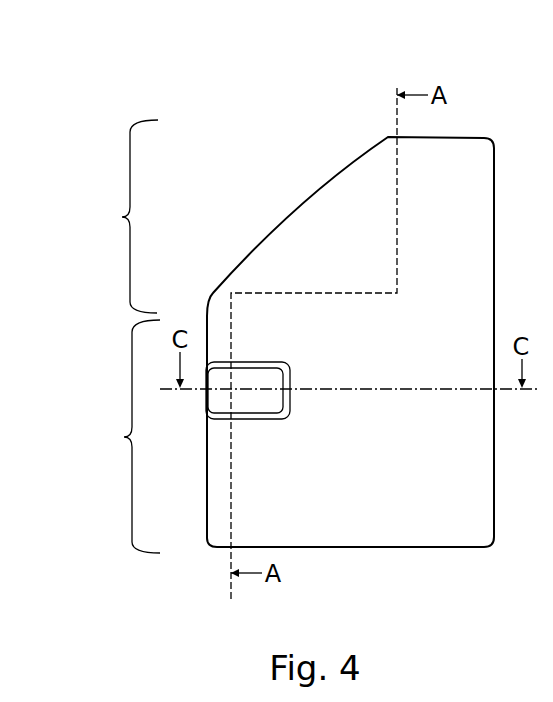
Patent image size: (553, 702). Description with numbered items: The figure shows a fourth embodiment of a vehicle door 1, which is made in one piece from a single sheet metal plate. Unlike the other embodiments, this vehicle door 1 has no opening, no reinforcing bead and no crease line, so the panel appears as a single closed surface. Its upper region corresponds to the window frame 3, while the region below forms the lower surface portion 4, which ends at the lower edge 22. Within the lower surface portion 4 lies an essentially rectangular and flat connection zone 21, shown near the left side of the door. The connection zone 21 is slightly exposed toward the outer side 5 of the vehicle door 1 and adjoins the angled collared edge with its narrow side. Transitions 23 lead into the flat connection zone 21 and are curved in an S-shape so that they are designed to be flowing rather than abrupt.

The vehicle door 1 is at (325, 163).
The window frame 3 is at (122, 217).
The surface portion 4 is at (124, 437).
The outer side 5 is at (452, 462).
The connection zone 21 is at (260, 402).
The lower edge 22 is at (456, 550).
The transitions 23 is at (288, 417).